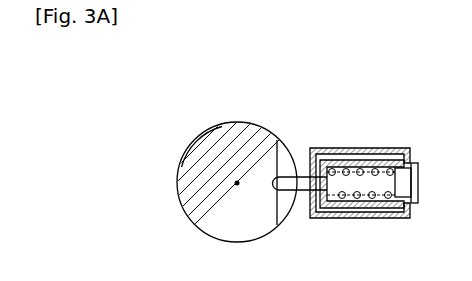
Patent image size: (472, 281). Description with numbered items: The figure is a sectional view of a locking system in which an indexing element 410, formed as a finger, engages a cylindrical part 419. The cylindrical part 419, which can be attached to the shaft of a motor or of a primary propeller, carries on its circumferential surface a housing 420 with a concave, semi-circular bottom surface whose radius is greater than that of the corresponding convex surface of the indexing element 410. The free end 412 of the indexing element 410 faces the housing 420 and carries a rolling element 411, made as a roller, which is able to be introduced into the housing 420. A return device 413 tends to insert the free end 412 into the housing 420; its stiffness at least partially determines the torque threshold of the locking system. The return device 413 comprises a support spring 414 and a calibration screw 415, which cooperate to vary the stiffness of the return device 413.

The indexing element 410 is at (332, 133).
The rolling element 411 is at (262, 196).
The free end 412 is at (303, 197).
The return device 413 is at (377, 147).
The support spring 414 is at (379, 208).
The calibration screw 415 is at (420, 183).
The cylindrical part 419 is at (215, 226).
The housing 420 is at (253, 168).